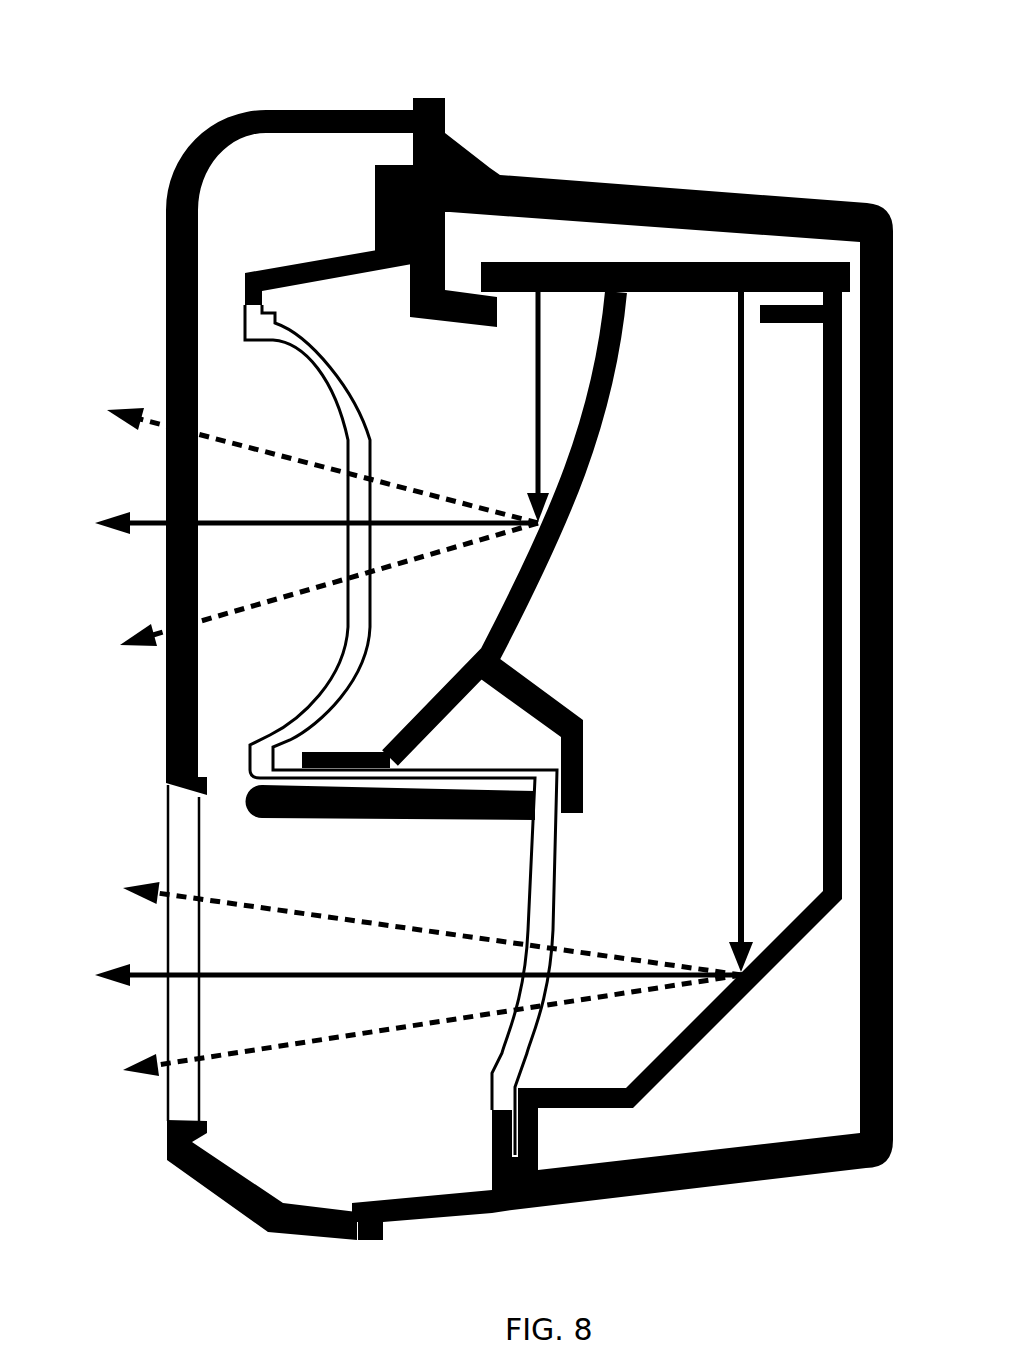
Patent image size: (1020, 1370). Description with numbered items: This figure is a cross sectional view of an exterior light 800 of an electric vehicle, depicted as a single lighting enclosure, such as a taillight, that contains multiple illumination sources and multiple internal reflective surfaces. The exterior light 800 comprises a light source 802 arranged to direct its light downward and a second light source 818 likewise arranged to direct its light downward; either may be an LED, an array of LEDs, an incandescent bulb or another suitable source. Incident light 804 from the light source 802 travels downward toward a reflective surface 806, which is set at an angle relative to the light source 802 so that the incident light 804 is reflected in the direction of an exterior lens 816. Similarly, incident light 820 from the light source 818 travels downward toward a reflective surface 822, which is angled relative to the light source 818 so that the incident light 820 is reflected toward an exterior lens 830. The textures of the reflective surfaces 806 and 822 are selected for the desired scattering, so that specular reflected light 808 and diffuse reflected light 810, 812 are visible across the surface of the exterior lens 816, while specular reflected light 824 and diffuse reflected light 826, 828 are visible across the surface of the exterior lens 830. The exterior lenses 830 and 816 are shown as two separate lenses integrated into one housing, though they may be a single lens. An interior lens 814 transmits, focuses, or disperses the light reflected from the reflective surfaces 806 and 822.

The exterior light 800 is at (548, 36).
The light source 802 is at (725, 295).
The incident light 804 is at (740, 483).
The reflective surface 806 is at (778, 957).
The specular reflected light 808 is at (250, 975).
The diffuse reflected light 810 is at (302, 912).
The diffuse reflected light 812 is at (235, 1054).
The interior lens 814 is at (552, 866).
The exterior lens 816 is at (170, 822).
The light source 818 is at (535, 295).
The incident light 820 is at (538, 410).
The reflective surface 822 is at (535, 570).
The specular reflected light 824 is at (238, 523).
The diffuse reflected light 826 is at (245, 441).
The diffuse reflected light 828 is at (230, 612).
The exterior lens 830 is at (182, 288).